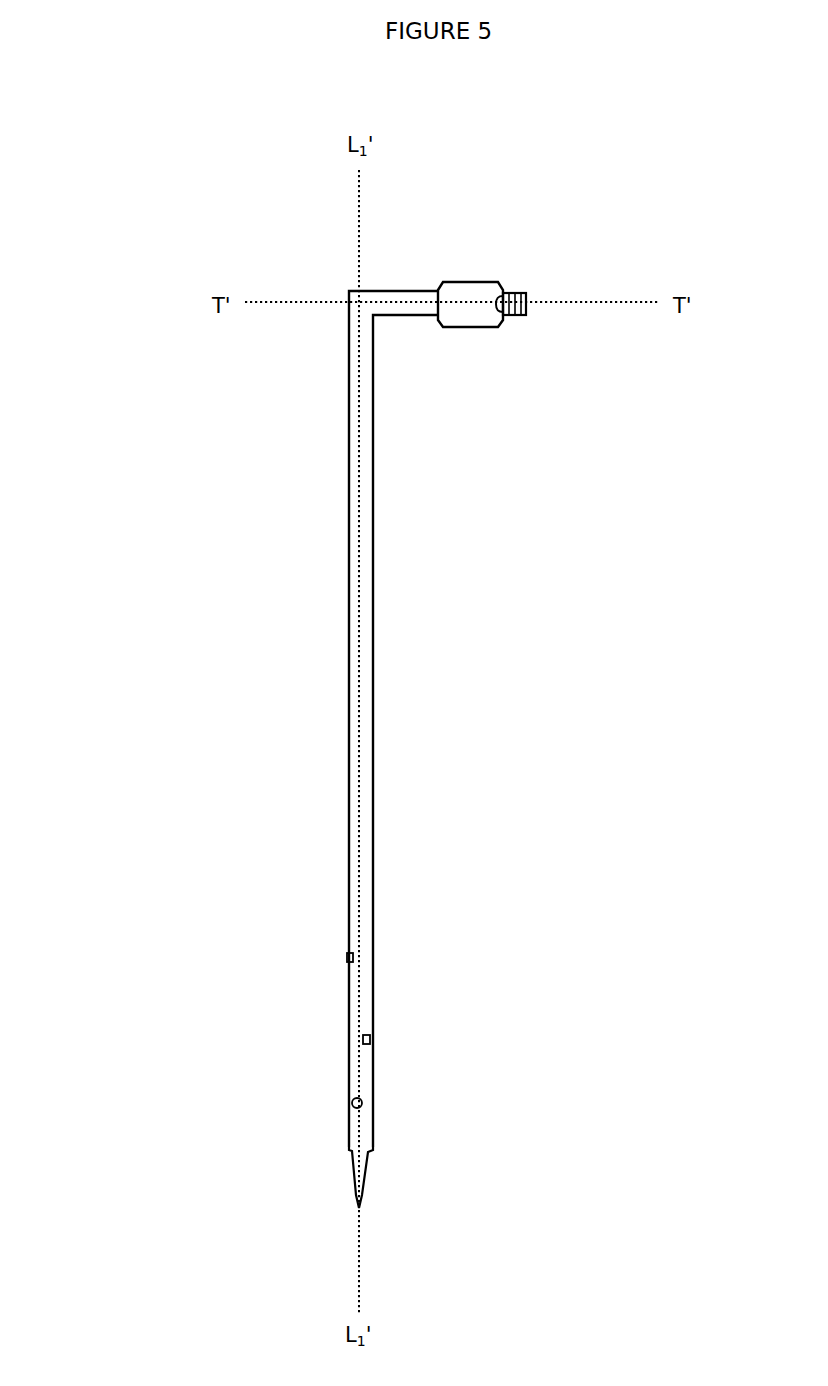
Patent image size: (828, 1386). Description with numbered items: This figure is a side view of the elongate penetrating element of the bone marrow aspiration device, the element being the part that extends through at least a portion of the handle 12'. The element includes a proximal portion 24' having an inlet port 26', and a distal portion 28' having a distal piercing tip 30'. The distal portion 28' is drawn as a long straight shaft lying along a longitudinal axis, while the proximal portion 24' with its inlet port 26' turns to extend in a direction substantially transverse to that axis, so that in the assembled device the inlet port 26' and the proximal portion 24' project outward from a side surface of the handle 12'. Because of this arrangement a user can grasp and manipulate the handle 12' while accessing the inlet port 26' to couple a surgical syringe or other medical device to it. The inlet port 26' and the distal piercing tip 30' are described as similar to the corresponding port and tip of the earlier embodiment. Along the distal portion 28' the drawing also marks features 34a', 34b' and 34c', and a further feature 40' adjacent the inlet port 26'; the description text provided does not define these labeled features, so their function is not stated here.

The handle 12' is at (358, 667).
The proximal portion 24' is at (500, 307).
The inlet port 26' is at (545, 290).
The distal portion 28' is at (347, 755).
The distal piercing tip 30' is at (261, 1183).
The marker/opening 34a' is at (443, 1106).
The marker/opening 34b' is at (453, 1042).
The marker/opening 34c' is at (430, 961).
The threaded fitting 40' is at (514, 367).